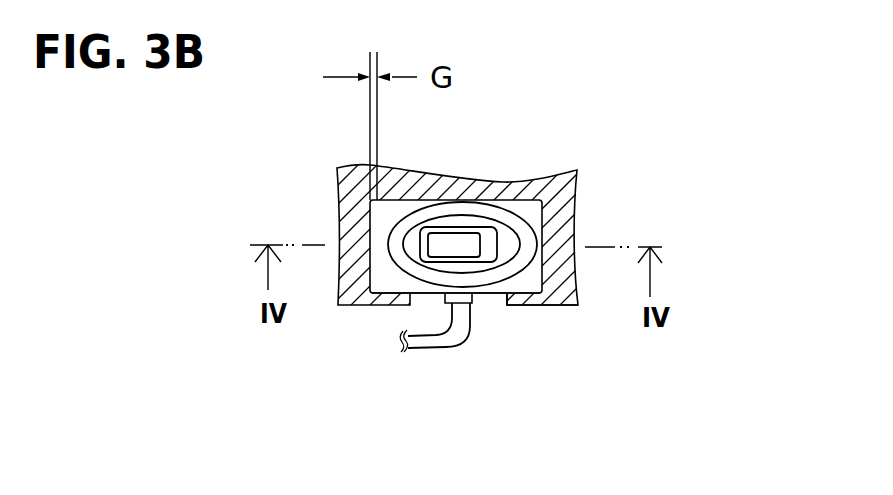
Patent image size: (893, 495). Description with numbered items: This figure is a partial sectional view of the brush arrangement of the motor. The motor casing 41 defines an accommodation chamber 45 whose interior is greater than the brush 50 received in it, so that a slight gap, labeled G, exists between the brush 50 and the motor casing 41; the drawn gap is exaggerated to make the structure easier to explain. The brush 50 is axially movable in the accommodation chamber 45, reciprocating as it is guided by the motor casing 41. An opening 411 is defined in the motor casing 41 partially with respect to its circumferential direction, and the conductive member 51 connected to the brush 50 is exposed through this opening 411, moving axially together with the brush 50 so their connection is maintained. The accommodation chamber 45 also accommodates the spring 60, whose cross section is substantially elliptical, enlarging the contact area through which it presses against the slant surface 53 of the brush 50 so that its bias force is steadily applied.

The motor casing 41 is at (345, 176).
The opening 411 is at (497, 304).
The accommodation chamber 45 is at (400, 187).
The brush 50 is at (370, 215).
The conductive member 51 is at (418, 348).
The slant surface 53 is at (385, 280).
The spring 60 is at (502, 183).